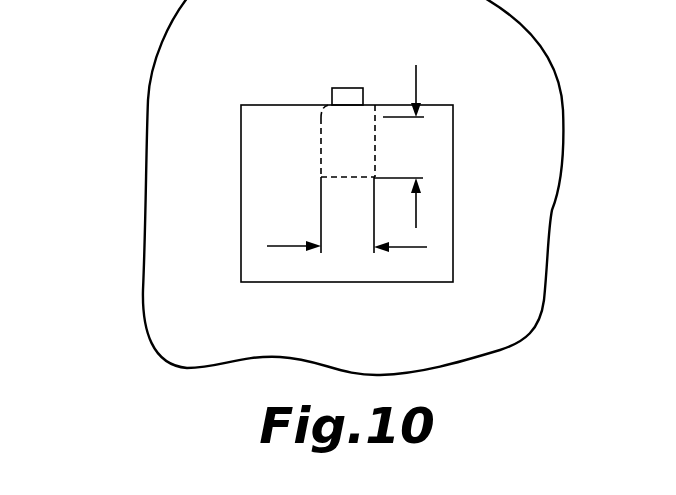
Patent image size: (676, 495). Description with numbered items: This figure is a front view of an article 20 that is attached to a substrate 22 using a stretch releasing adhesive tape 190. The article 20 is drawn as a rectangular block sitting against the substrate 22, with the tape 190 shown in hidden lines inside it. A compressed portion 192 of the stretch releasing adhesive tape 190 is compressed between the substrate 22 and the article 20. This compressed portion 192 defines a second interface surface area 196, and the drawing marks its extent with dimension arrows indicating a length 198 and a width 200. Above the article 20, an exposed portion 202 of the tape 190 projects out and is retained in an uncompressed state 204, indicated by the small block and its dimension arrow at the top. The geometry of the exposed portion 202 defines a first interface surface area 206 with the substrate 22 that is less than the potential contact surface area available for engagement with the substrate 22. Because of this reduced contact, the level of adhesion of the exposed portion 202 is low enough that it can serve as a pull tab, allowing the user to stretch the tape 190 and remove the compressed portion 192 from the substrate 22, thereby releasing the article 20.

The article 20 is at (440, 272).
The substrate 22 is at (158, 300).
The stretch releasing adhesive tape 190 is at (306, 143).
The compressed portion 192 is at (321, 160).
The second interface surface area 196 is at (322, 175).
The length 198 is at (417, 218).
The width 200 is at (280, 247).
The exposed portion 202 is at (332, 100).
The uncompressed state 204 is at (355, 88).
The first interface surface area 206 is at (344, 88).